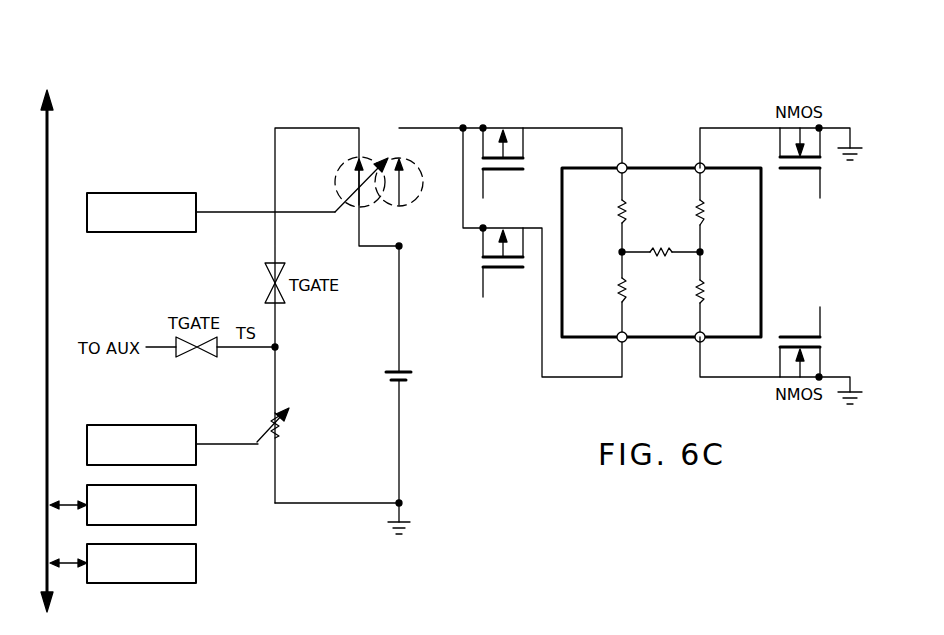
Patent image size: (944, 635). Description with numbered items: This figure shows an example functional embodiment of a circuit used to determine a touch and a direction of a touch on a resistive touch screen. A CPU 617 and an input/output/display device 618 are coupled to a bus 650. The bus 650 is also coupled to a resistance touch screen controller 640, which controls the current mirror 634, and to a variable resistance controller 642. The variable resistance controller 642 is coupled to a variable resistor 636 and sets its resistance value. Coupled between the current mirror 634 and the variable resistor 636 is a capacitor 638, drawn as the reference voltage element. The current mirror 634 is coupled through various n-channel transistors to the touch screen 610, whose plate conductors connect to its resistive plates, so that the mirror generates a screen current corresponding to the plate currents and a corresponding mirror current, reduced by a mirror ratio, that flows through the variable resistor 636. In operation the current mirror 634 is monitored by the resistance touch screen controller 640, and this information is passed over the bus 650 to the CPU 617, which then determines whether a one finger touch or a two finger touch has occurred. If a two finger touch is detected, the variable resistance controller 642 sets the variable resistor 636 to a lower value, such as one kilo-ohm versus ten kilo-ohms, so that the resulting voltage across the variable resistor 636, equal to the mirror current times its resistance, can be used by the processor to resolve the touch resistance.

The bus 650 is at (50, 133).
The resistance touch screen controller 640 is at (141, 193).
The current mirror 634 is at (380, 129).
The variable resistance controller 642 is at (142, 425).
The variable resistor 636 is at (267, 422).
The capacitor 638 is at (384, 372).
The touch screen 610 is at (761, 250).
The CPU 617 is at (196, 517).
The input/output/display device 618 is at (196, 576).